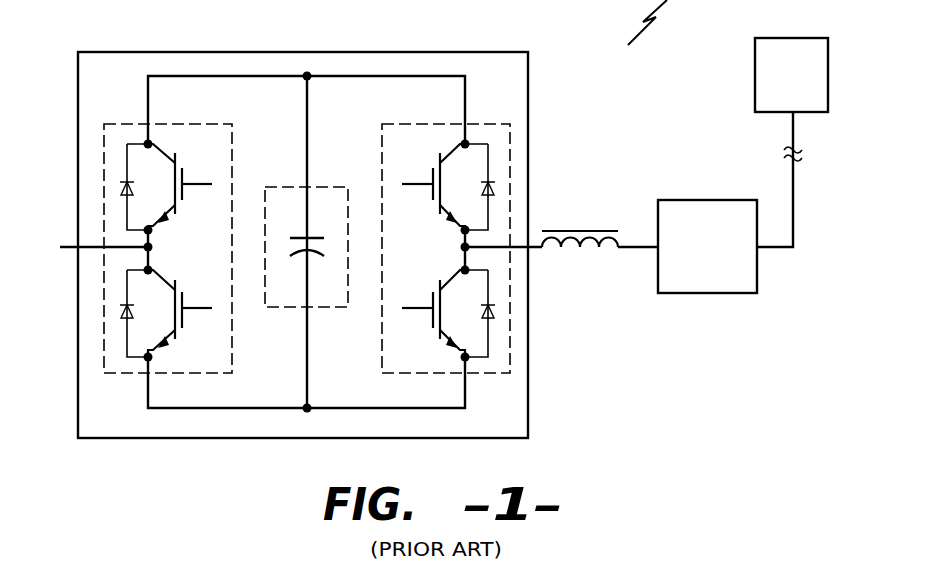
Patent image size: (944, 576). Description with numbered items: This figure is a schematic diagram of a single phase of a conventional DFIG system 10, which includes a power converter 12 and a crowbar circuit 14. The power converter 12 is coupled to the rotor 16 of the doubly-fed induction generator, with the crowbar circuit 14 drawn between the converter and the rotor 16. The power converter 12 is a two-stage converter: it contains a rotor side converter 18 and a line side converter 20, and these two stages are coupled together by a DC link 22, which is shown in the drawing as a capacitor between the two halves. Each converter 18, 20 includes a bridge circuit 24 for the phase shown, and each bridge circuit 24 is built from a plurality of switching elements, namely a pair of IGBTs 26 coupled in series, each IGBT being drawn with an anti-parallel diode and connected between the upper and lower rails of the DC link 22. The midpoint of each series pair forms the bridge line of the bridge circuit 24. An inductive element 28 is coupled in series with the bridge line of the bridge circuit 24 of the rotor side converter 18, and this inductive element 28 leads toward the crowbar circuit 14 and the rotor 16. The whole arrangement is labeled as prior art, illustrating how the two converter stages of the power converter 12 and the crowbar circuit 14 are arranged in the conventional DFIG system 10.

The DFIG system 10 is at (720, 571).
The power converter 12 is at (403, 52).
The crowbar circuit 14 is at (692, 259).
The rotor 16 is at (777, 84).
The rotor side converter 18 is at (528, 160).
The line side converter 20 is at (103, 163).
The DC link 22 is at (305, 100).
The bridge circuit 24 is at (150, 259).
The IGBT 26 is at (157, 155).
The inductive element 28 is at (580, 230).